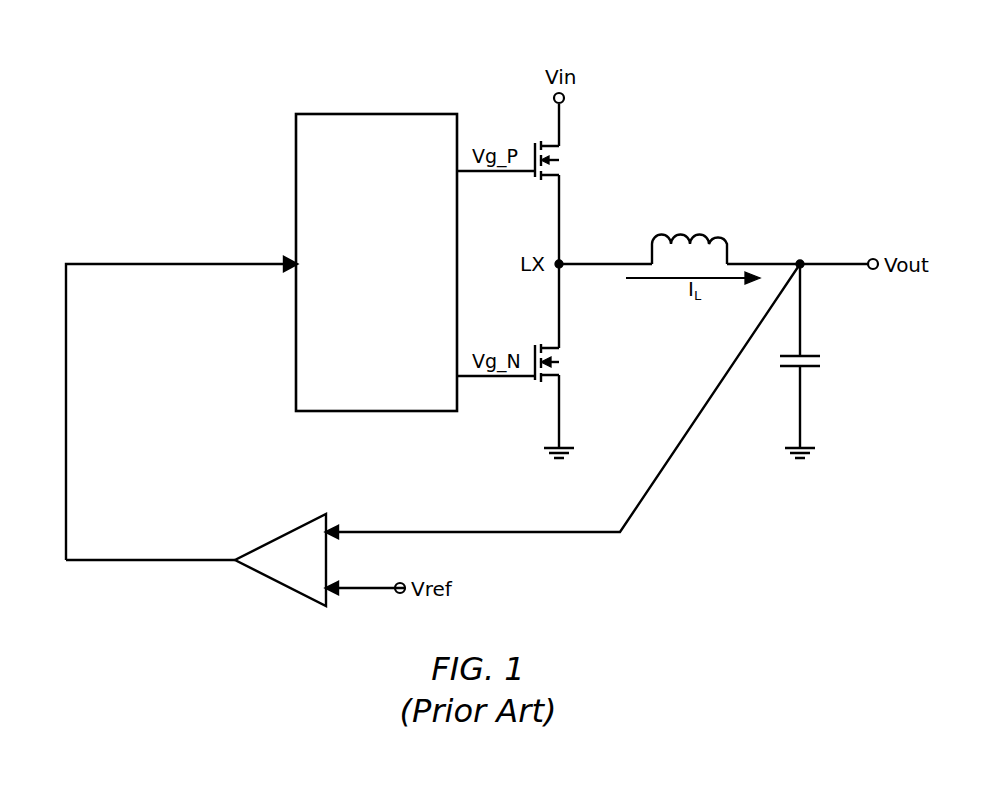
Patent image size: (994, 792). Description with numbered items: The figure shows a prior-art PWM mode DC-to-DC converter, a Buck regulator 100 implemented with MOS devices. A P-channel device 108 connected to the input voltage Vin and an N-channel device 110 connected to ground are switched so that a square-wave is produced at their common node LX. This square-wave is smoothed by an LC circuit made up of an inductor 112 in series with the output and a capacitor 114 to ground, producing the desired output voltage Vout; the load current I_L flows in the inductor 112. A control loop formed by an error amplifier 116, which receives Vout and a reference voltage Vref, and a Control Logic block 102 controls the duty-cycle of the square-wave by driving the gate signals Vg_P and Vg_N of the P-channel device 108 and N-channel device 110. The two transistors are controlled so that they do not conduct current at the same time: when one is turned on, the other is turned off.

The Buck regulator 100 is at (118, 46).
The Control Logic block 102 is at (416, 407).
The P-channel device 108 is at (555, 162).
The N-channel device 110 is at (553, 360).
The inductor 112 is at (690, 238).
The capacitor 114 is at (806, 352).
The error amplifier 116 is at (300, 524).